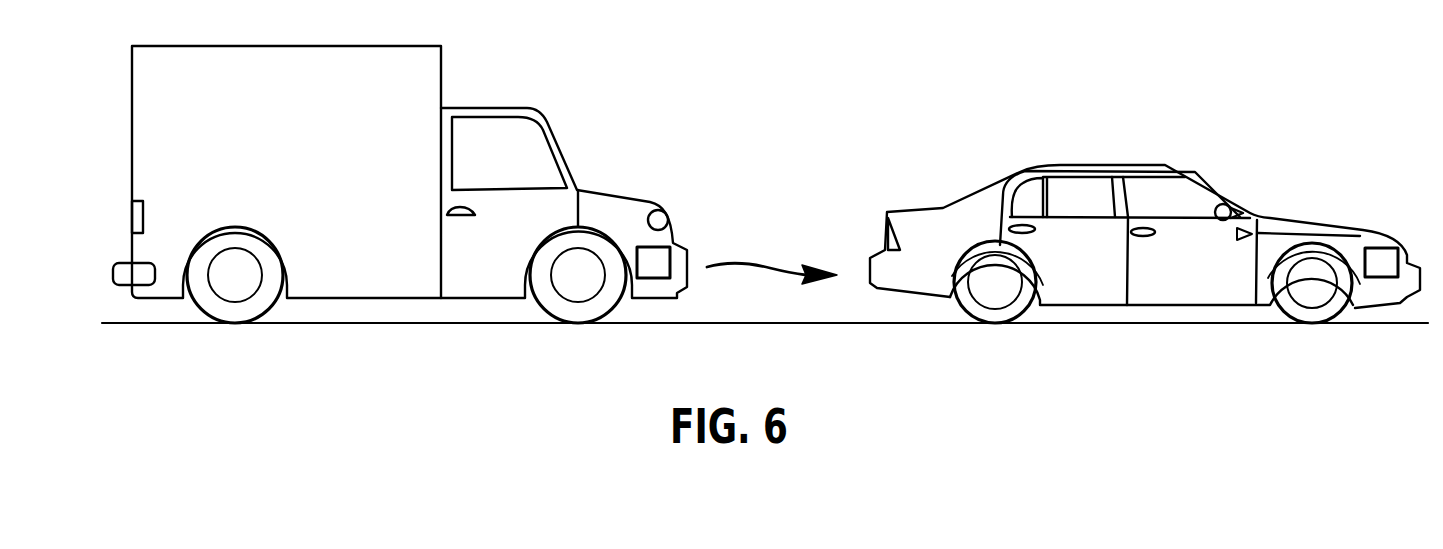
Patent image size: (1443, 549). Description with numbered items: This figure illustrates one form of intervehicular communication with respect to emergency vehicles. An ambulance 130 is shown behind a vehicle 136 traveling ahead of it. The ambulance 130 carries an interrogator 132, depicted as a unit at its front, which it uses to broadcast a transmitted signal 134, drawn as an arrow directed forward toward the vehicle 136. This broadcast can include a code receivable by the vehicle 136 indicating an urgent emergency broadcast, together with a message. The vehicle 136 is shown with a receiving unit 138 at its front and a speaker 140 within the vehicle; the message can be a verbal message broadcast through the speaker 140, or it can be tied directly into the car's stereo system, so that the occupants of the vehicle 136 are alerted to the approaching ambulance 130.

The ambulance 130 is at (378, 241).
The interrogator 132 is at (650, 248).
The transmitted signal 134 is at (752, 265).
The vehicle 136 is at (1103, 264).
The transceiver unit on automobile front 138 is at (1380, 257).
The speaker 140 is at (1243, 244).